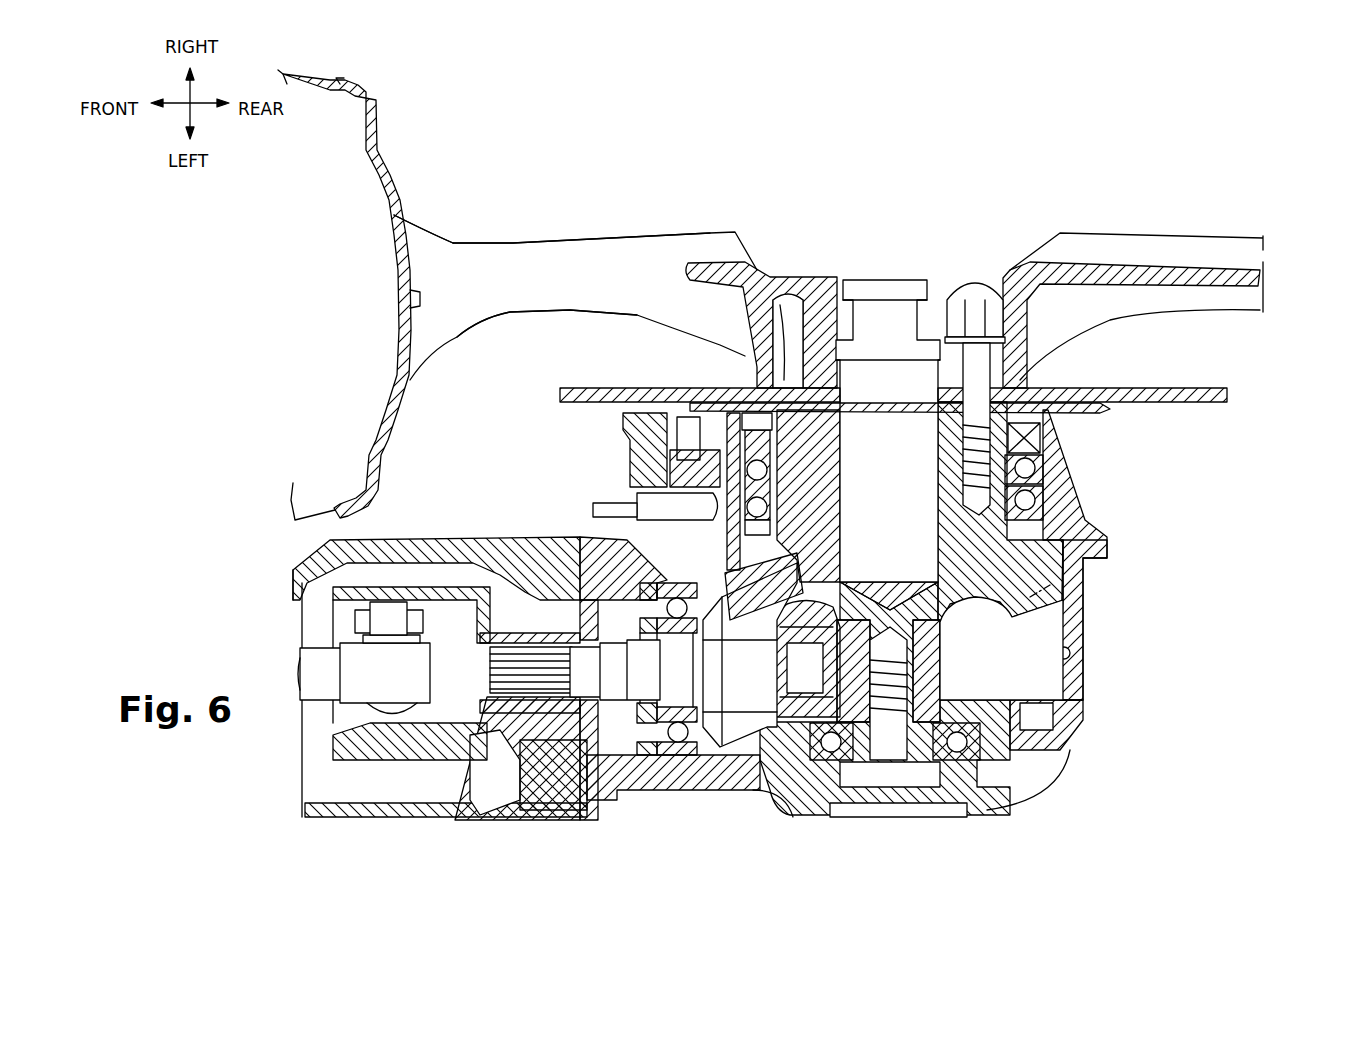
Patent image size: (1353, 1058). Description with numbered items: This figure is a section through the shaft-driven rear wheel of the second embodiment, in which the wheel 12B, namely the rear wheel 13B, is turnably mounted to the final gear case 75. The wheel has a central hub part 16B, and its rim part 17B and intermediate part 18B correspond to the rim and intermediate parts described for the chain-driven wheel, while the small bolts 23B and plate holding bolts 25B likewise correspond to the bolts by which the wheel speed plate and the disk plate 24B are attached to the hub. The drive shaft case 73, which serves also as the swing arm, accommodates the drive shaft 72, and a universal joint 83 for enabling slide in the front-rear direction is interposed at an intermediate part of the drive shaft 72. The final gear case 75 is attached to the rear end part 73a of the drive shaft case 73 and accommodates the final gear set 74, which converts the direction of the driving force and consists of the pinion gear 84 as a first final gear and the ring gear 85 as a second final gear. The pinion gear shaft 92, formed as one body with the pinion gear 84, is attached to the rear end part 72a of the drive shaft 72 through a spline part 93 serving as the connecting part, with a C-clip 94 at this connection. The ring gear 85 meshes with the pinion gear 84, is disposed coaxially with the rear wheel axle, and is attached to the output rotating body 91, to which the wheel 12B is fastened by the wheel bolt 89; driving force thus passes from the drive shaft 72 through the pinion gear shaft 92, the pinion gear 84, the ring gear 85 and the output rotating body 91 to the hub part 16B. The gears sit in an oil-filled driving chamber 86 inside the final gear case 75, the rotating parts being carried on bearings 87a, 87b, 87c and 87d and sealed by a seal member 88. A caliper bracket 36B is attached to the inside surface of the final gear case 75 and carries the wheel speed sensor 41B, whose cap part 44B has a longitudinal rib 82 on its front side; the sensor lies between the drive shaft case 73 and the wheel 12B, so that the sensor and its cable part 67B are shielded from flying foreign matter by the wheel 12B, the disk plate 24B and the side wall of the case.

The wheel 12B is at (513, 245).
The rear wheel 13B is at (423, 229).
The rim 17B is at (395, 186).
The wheel disc 18B is at (613, 260).
The hub part 16B is at (752, 272).
The damper 25B is at (787, 330).
The wheel bolt 89 is at (972, 305).
The brake disc 23B is at (740, 385).
The disk plate 24B is at (1227, 395).
The caliper bracket 36B is at (617, 480).
The longitudinal rib 82 is at (630, 422).
The wheel speed sensor 41B is at (615, 456).
The cable part 67B is at (650, 500).
The cap part 44B is at (655, 515).
The rear end part 72a is at (522, 562).
The seal member 88 is at (1030, 455).
The bearing 87d is at (1030, 470).
The bearing 87c is at (1035, 497).
The ring gear 85 is at (1085, 627).
The driving chamber 86 is at (1070, 658).
The final gear case 75 is at (1085, 693).
The output rotating body 91 is at (933, 617).
The bearing 87b is at (975, 745).
The drive shaft 72 is at (318, 687).
The drive shaft case 73 is at (350, 755).
The universal joint 83 is at (401, 733).
The spline part 93 is at (487, 760).
The C-clip 94 is at (500, 700).
The pinion gear shaft 92 is at (543, 720).
The rear end part 73a is at (573, 800).
The bearing 87a is at (672, 755).
The pinion gear 84 is at (730, 748).
The final gear set 74 is at (742, 752).